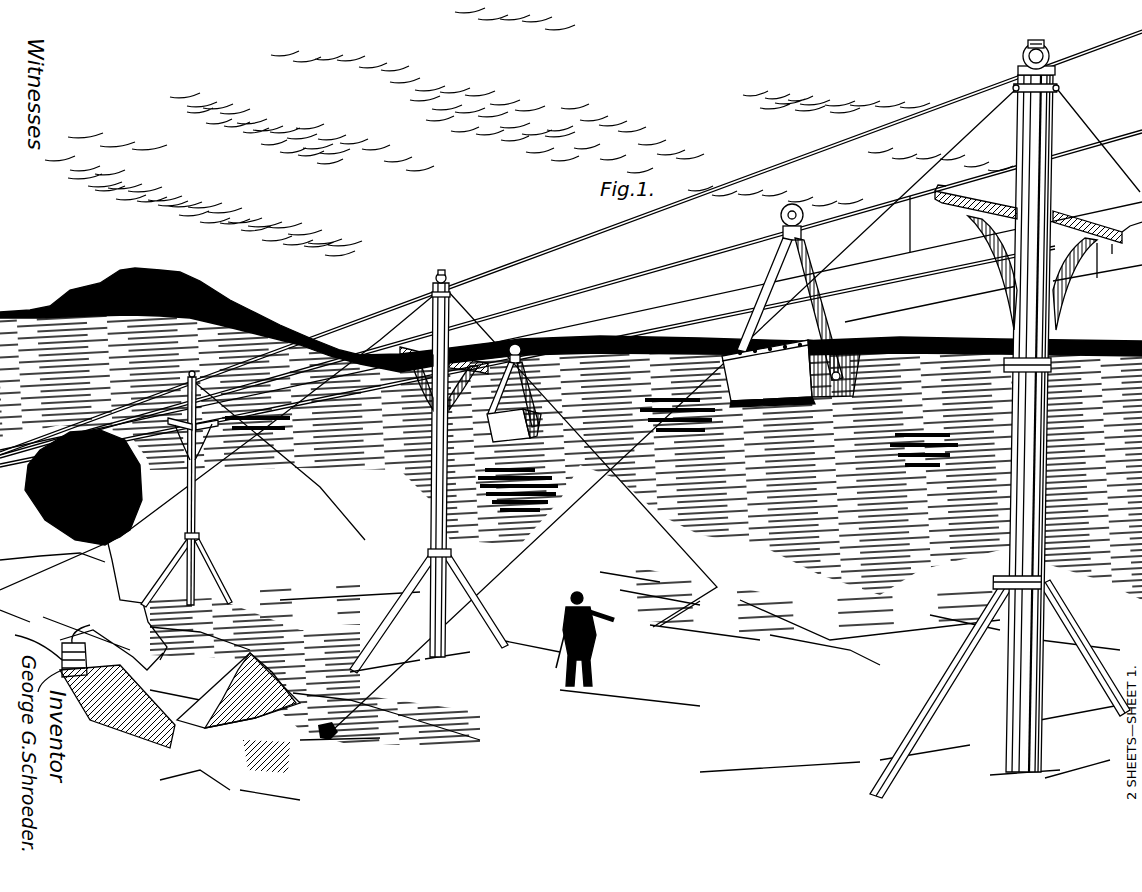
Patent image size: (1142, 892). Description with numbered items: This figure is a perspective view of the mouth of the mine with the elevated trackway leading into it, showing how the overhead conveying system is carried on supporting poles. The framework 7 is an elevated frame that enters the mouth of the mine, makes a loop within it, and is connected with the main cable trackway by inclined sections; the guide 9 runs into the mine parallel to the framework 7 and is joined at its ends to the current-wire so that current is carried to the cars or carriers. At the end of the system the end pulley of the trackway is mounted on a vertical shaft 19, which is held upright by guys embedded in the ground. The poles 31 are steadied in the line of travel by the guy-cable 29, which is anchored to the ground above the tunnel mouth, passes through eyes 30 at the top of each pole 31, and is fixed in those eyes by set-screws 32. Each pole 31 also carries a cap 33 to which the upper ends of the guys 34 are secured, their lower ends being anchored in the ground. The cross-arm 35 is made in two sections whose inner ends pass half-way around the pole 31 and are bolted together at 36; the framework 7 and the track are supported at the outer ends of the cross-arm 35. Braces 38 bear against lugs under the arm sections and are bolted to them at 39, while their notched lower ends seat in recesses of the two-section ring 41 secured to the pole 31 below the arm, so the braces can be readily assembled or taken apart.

The framework 7 is at (676, 266).
The guide 9 is at (624, 321).
The vertical shaft 19 is at (791, 305).
The guy-cable 29 is at (544, 253).
The eye 30 is at (1022, 66).
The pole 31 is at (1052, 130).
The set-screw 32 is at (1027, 46).
The cap 33 is at (1060, 87).
The guy 34 is at (978, 130).
The cross-arm 35 is at (998, 208).
The bolted joint of cross-arm sections 36 is at (1060, 216).
The brace 38 is at (994, 266).
The brace bolt connection 39 is at (1113, 244).
The ring 41 is at (1006, 370).